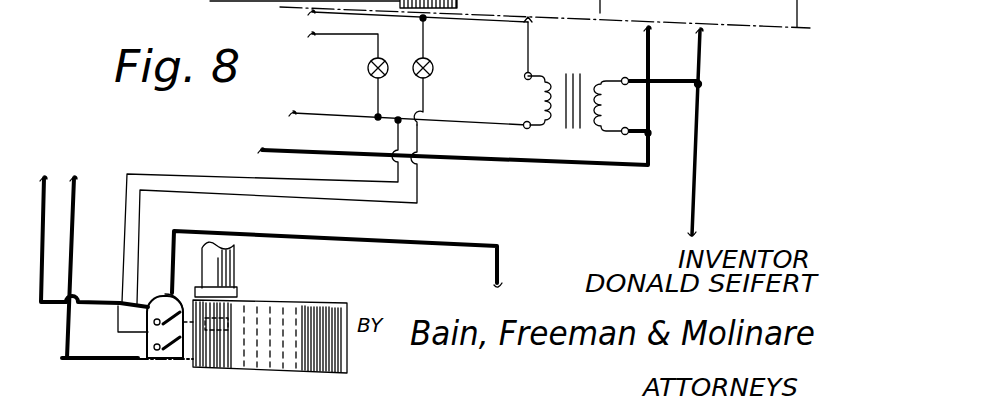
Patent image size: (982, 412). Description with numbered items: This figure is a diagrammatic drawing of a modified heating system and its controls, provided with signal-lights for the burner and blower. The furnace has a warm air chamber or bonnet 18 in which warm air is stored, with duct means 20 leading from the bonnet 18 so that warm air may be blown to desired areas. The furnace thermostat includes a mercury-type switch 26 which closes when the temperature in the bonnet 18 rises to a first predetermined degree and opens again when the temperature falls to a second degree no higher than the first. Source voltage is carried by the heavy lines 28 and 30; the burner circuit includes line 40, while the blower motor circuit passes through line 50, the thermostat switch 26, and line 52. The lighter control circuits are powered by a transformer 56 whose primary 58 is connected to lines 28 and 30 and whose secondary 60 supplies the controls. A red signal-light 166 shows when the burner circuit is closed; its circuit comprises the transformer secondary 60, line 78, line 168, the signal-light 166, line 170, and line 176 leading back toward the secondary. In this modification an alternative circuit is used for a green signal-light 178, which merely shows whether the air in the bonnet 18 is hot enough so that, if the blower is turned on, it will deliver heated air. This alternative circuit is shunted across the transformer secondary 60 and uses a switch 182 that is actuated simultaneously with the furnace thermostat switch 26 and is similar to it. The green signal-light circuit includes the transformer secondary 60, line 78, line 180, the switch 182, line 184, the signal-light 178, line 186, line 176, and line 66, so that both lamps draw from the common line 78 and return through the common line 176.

The warm air chamber or bonnet 18 is at (280, 361).
The duct means 20 is at (237, 275).
The switch 26 is at (182, 296).
The line 28 is at (652, 38).
The line 30 is at (703, 54).
The line 40 is at (74, 244).
The line 50 is at (48, 208).
The line 52 is at (375, 245).
The transformer 56 is at (582, 71).
The primary 58 is at (607, 103).
The secondary 60 is at (538, 100).
The line 66 is at (530, 44).
The line 78 is at (460, 126).
The red signal-light 166 is at (370, 79).
The line 168 is at (379, 100).
The line 170 is at (333, 36).
The line 176 is at (503, 22).
The green signal-light 178 is at (430, 76).
The line 180 is at (192, 173).
The switch 182 is at (146, 348).
The line 184 is at (262, 202).
The line 186 is at (424, 42).